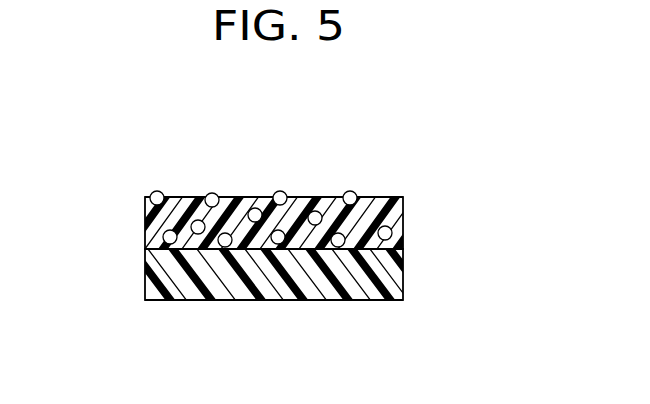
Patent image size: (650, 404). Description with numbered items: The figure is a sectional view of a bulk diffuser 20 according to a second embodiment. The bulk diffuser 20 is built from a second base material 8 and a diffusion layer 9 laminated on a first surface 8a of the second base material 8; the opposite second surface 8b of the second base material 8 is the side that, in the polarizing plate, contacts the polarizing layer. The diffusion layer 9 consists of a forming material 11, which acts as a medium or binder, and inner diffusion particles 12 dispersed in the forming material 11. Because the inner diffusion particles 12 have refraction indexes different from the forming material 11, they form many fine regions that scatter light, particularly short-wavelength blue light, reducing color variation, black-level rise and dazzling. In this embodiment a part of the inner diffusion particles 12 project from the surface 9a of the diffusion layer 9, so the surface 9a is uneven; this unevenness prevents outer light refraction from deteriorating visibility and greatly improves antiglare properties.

The bulk diffuser 20 is at (450, 168).
The second base material 8 is at (400, 270).
The first surface 8a is at (155, 243).
The second surface 8b is at (160, 300).
The diffusion layer 9 is at (400, 218).
The surface of the diffusion layer 9a is at (370, 197).
The forming material 11 is at (185, 204).
The inner diffusion particles 12 is at (228, 246).